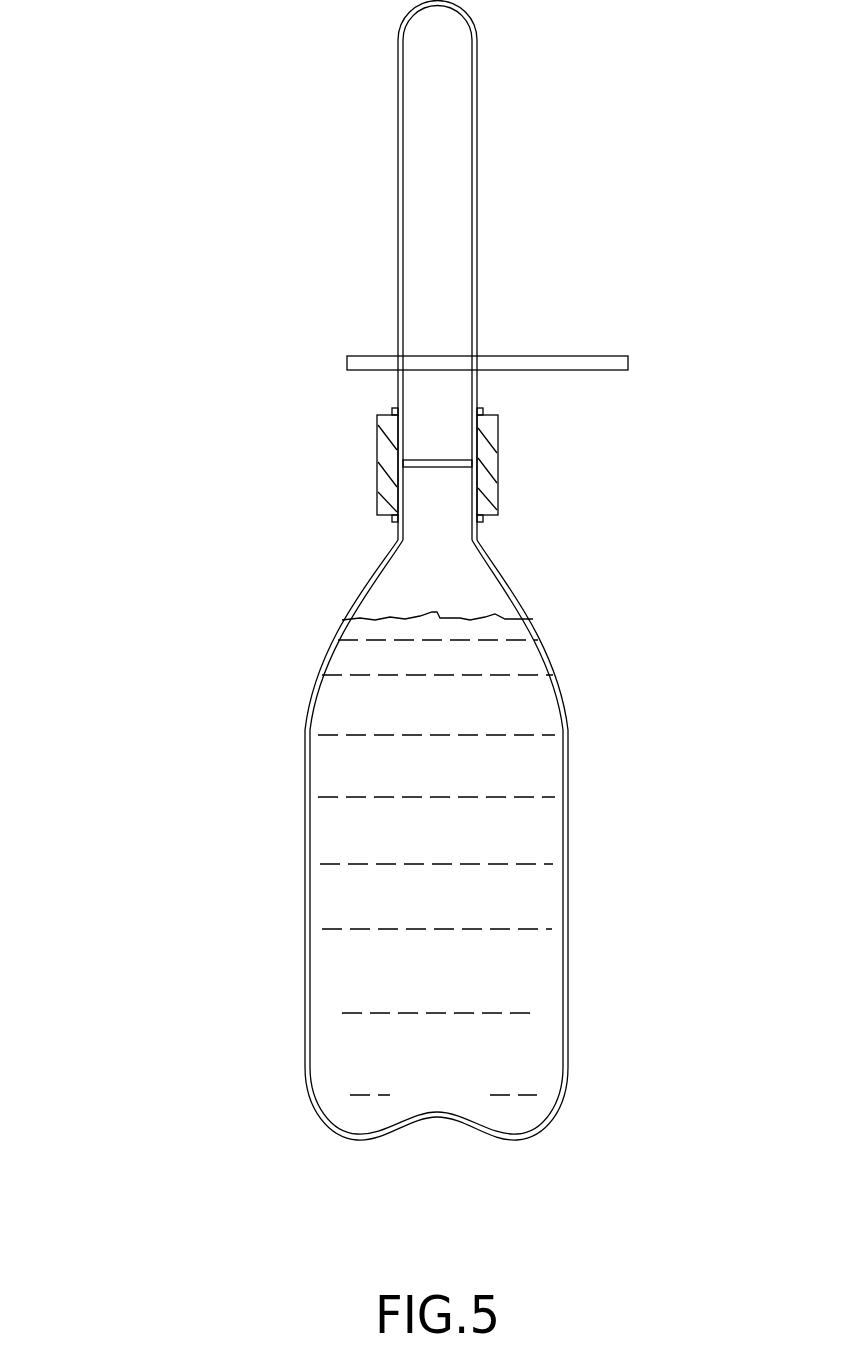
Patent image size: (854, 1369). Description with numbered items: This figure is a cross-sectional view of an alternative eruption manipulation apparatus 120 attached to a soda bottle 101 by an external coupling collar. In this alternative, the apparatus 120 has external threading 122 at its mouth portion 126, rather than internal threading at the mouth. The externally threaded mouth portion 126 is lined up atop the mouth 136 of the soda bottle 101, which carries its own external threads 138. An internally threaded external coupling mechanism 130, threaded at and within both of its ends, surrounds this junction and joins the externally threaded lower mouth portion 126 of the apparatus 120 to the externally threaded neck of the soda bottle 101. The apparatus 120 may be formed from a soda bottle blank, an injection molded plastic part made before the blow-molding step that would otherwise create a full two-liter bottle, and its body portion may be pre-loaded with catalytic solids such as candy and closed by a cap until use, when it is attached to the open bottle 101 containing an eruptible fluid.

The soda bottle 101 is at (190, 763).
The eruption manipulation apparatus 120 is at (600, 168).
The external threading 122 is at (496, 431).
The mouth portion 126 is at (450, 430).
The external coupling mechanism 130 is at (362, 446).
The mouth of the soda bottle 136 is at (450, 507).
The external threads 138 is at (366, 503).